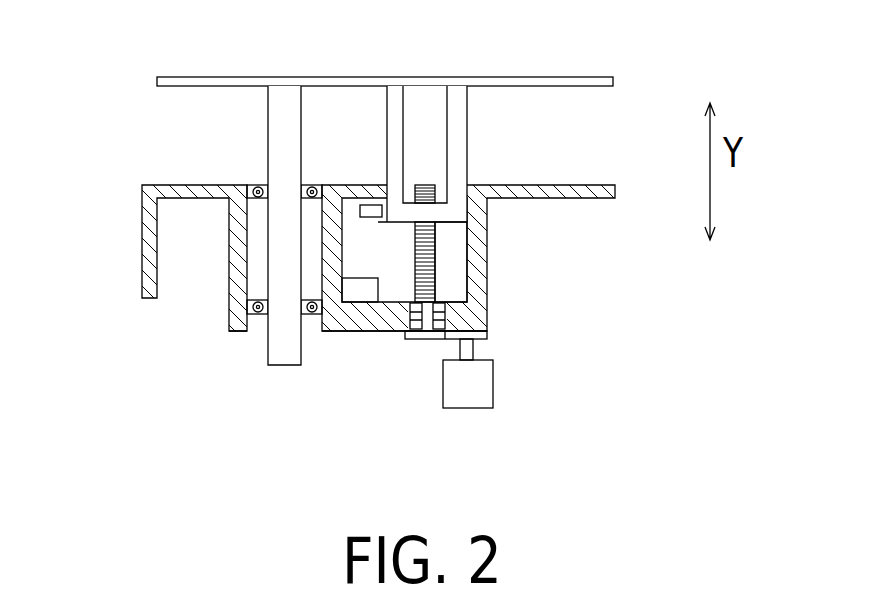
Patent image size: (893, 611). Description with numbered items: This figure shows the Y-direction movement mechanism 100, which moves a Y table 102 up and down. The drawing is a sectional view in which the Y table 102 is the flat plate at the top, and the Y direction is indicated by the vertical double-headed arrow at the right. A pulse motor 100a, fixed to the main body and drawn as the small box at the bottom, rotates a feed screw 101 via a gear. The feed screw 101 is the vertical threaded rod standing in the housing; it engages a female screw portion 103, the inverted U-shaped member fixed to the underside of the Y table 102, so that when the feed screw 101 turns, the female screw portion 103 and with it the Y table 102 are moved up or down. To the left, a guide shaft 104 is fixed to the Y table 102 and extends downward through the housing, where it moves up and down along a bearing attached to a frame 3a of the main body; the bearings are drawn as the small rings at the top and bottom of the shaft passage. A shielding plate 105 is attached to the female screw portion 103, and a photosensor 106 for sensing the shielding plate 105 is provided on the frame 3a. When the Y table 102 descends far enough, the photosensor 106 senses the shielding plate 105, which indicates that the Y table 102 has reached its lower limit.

The Y-direction movement mechanism 100 is at (527, 259).
The pulse motor 100a is at (463, 392).
The feed screw 101 is at (437, 280).
The Y table 102 is at (581, 78).
The female screw portion 103 is at (468, 147).
The guide shaft 104 is at (268, 350).
The shielding plate 105 is at (366, 213).
The photosensor 106 is at (358, 289).
The frame 3a is at (328, 333).